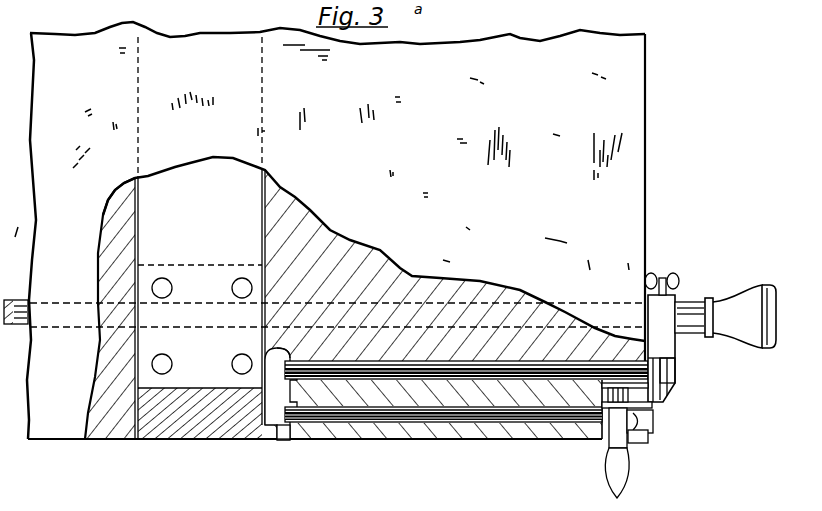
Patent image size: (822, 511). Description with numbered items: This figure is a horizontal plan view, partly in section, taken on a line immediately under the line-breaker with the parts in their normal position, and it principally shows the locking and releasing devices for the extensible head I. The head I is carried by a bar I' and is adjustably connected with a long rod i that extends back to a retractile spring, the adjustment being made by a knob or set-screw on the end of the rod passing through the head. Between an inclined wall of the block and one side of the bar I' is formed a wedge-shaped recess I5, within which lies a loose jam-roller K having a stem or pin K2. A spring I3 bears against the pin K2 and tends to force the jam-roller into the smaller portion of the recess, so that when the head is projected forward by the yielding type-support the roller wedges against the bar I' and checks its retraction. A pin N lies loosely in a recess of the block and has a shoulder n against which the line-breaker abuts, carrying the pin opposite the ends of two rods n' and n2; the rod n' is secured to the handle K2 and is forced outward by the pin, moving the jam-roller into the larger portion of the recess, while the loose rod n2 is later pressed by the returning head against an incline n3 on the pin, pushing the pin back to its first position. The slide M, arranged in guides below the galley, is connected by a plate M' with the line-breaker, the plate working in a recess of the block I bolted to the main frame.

The rod i is at (16, 304).
The knob i' is at (725, 312).
The slide M is at (201, 296).
The plate M' is at (200, 427).
The pin N is at (281, 394).
The shoulder n is at (283, 444).
The rod n' is at (443, 436).
The rod n2 is at (412, 373).
The incline n3 is at (266, 362).
The head I is at (672, 337).
The bar I' is at (693, 385).
The spring I3 is at (653, 428).
The wedge-shaped recess I5 is at (648, 438).
The jam-roller K is at (653, 397).
The stem or pin K2 is at (624, 477).